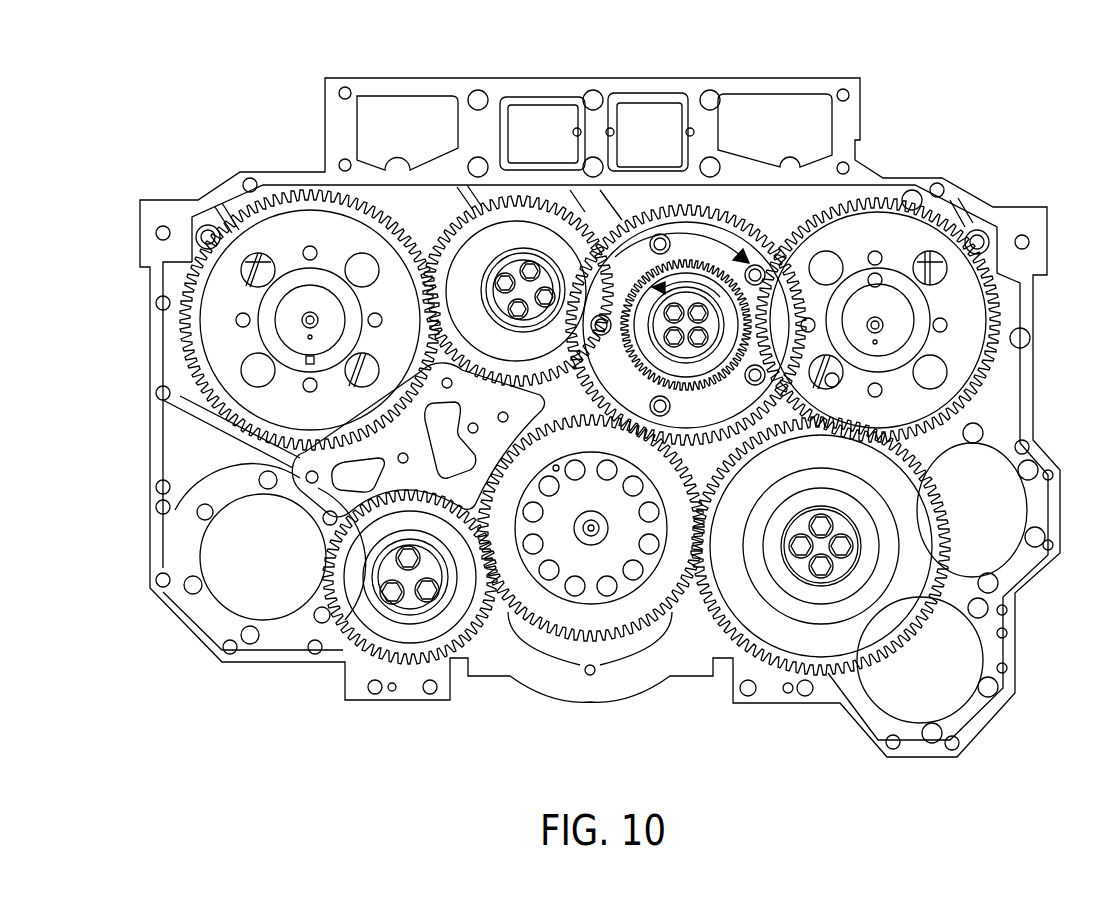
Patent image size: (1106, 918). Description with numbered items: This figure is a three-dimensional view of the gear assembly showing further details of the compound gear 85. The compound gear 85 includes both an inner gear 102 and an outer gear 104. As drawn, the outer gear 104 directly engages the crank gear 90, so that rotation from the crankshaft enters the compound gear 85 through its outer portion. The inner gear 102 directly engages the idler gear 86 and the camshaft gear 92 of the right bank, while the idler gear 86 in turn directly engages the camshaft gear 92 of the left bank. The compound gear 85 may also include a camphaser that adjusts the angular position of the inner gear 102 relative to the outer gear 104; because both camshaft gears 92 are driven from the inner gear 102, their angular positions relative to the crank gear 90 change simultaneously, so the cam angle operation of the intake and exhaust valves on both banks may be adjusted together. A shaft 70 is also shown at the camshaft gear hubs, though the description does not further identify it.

The camshaft 70 is at (282, 318).
The compound gear 85 is at (745, 210).
The idler gear 86 is at (473, 252).
The crank gear 90 is at (590, 625).
The camshaft gear 92 is at (293, 240).
The inner gear 102 is at (765, 337).
The outer gear 104 is at (645, 460).